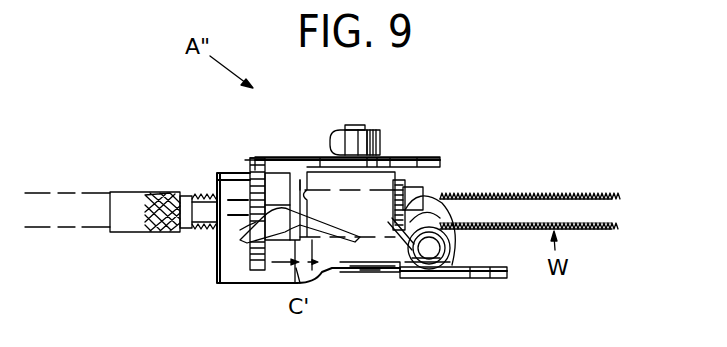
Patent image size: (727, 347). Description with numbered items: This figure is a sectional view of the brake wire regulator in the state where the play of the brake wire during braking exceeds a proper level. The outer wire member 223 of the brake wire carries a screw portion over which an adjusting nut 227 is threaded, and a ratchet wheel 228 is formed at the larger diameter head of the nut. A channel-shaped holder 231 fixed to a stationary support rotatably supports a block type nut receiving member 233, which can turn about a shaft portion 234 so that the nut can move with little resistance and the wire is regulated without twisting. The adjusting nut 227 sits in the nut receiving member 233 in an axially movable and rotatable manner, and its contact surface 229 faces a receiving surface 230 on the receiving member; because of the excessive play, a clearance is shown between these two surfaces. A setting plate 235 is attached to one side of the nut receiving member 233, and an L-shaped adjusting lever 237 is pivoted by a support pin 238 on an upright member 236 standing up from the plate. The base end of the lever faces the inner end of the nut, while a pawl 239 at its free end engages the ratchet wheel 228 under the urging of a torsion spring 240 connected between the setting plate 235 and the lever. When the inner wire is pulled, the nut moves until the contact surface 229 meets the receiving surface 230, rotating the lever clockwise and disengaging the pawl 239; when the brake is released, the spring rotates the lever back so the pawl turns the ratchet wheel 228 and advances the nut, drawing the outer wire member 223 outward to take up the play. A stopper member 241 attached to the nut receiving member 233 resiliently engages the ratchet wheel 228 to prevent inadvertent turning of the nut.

The outer wire member 223 is at (531, 205).
The adjusting nut 227 is at (277, 172).
The ratchet wheel 228 is at (250, 163).
The contact surface 229 is at (300, 176).
The receiving surface 230 is at (347, 204).
The channel-shaped holder 231 is at (380, 190).
The nut receiving member 233 is at (400, 178).
The shaft portion 234 is at (353, 125).
The setting plate 235 is at (490, 280).
The upright member 236 is at (434, 278).
The adjusting lever 237 is at (418, 196).
The support pin 238 is at (430, 249).
The pawl 239 is at (250, 246).
The torsion spring 240 is at (393, 262).
The stopper member 241 is at (251, 158).